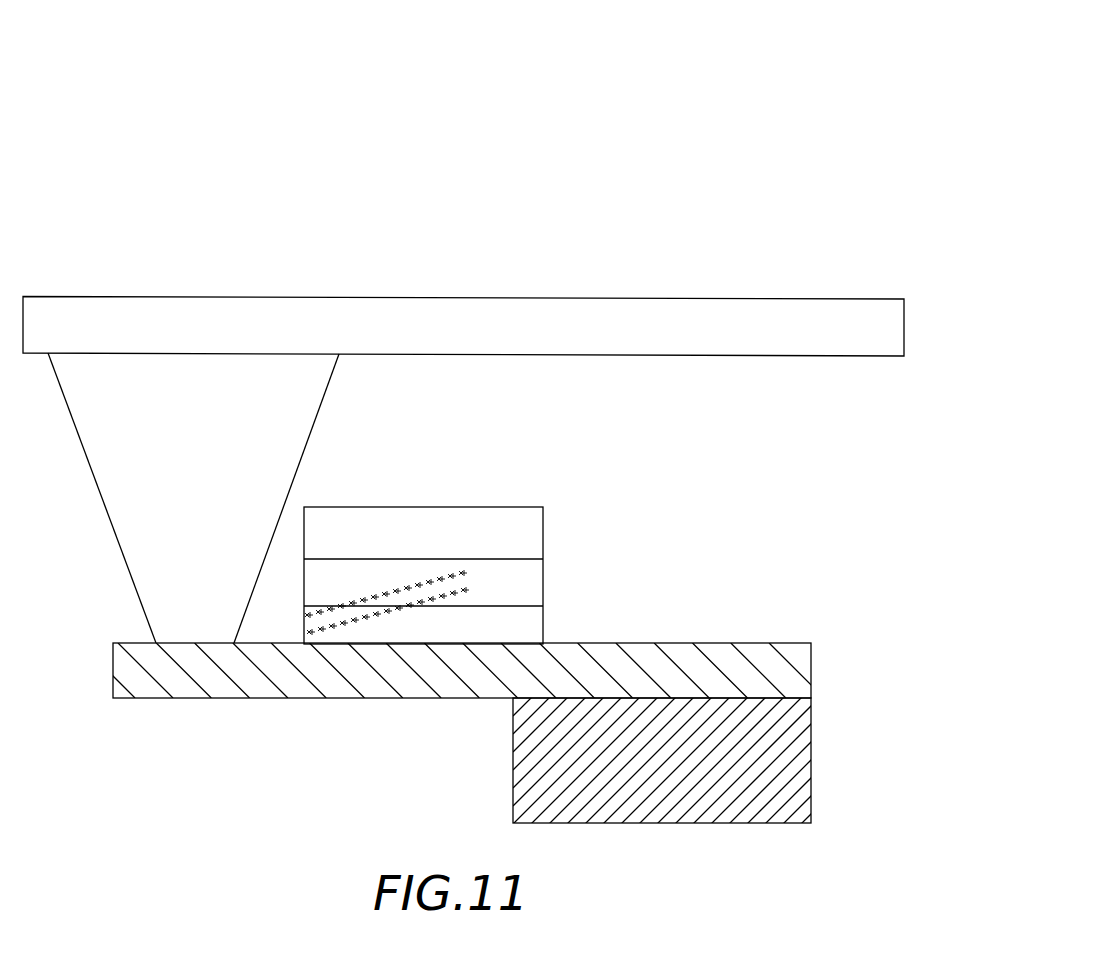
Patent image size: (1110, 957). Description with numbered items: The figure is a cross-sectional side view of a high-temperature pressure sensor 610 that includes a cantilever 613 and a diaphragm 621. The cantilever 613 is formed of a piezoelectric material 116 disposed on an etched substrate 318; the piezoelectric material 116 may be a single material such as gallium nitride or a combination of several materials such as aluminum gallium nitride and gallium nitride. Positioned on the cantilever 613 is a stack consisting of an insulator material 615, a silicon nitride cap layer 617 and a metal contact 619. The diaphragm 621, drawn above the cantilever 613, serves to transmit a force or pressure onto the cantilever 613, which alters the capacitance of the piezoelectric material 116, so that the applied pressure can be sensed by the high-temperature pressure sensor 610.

The high-temperature pressure sensor 610 is at (660, 115).
The diaphragm 621 is at (98, 511).
The metal contact 619 is at (425, 535).
The silicon nitride cap layer 617 is at (533, 577).
The insulator material 615 is at (537, 628).
The piezoelectric material 116 is at (800, 671).
The cantilever 613 is at (245, 703).
The etched substrate 318 is at (770, 790).